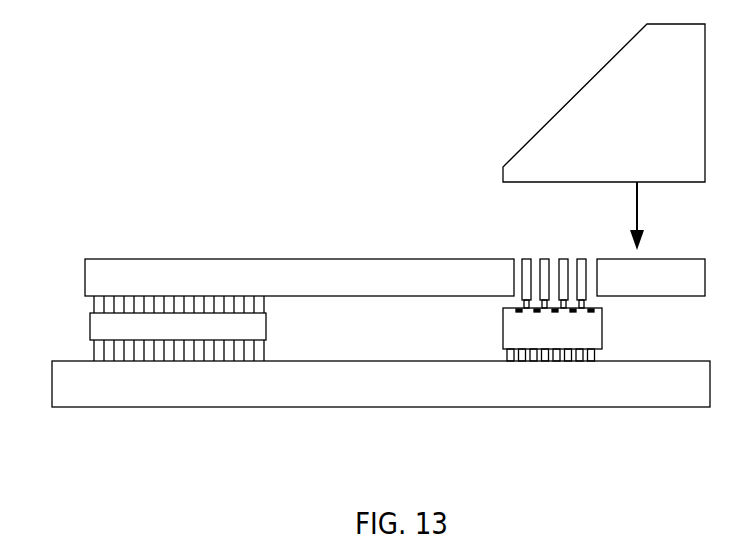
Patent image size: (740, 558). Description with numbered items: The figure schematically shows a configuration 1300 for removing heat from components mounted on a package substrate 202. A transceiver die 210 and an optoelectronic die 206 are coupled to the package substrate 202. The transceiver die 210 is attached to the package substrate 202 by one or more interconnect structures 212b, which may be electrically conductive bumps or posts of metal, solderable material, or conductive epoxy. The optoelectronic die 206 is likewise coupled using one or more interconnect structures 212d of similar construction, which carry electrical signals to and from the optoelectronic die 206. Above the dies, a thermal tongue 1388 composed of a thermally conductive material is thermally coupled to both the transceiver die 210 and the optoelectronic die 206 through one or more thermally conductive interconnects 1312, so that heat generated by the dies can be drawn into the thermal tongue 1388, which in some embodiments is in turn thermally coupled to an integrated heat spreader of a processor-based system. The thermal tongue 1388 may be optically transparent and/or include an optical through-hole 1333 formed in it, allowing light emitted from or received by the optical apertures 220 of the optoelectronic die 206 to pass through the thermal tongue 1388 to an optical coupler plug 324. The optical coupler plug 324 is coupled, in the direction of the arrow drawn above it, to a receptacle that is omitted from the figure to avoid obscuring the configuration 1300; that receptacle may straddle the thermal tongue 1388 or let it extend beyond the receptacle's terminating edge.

The configuration 1300 is at (258, 141).
The optical coupler plug 324 is at (669, 129).
The thermal tongue 1388 is at (355, 289).
The package substrate 202 is at (381, 395).
The transceiver die 210 is at (197, 336).
The thermally conductive interconnects 1312 is at (94, 300).
The interconnect structures 212b is at (263, 363).
The optoelectronic die 206 is at (559, 341).
The optical through-hole 1333 is at (535, 265).
The optical apertures 220 is at (520, 310).
The interconnect structures 212d is at (575, 352).